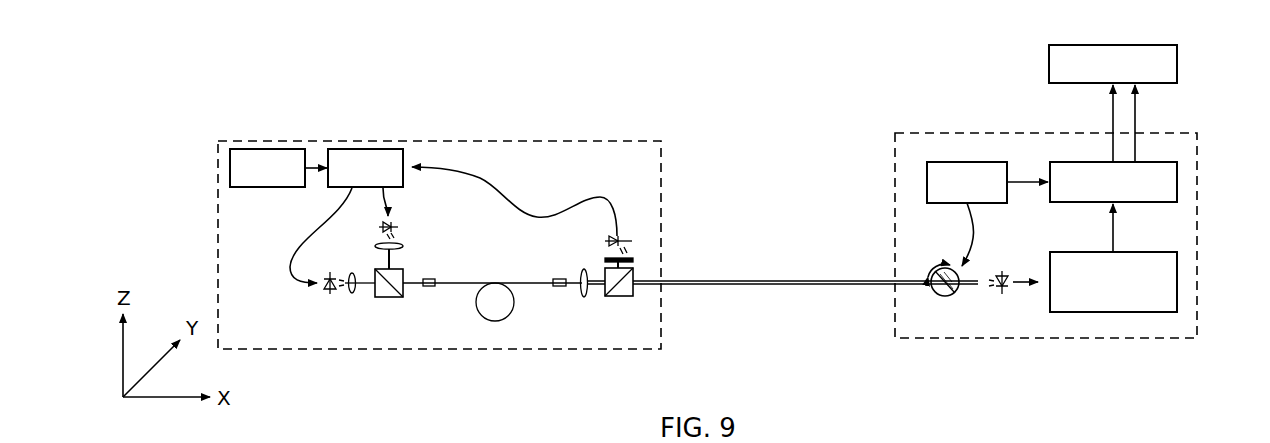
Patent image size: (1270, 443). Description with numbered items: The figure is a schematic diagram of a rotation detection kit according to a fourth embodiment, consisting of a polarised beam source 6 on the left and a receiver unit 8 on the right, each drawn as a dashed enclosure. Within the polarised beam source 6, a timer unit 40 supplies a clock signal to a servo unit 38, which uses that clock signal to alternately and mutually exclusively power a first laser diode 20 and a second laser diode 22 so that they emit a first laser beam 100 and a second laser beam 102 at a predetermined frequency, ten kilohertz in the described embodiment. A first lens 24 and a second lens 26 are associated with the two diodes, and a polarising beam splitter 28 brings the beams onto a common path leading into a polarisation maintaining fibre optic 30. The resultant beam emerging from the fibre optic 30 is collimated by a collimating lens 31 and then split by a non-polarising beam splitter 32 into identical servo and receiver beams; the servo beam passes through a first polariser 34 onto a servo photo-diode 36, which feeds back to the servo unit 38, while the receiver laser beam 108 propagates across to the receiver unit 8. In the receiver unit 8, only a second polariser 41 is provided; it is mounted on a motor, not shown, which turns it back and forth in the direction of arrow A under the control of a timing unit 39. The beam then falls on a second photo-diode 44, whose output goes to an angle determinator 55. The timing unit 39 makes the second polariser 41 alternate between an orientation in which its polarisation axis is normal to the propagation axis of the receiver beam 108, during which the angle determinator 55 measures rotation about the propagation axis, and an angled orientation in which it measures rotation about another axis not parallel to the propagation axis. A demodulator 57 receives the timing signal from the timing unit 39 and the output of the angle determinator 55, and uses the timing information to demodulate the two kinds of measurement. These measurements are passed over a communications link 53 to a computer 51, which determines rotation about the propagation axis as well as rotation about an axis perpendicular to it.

The polarised beam source 6 is at (420, 140).
The receiver unit 8 is at (1180, 338).
The first laser diode 20 is at (327, 291).
The second laser diode 22 is at (393, 224).
The first lens 24 is at (352, 294).
The second lens 26 is at (406, 246).
The polarising beam splitter 28 is at (389, 298).
The polarisation maintaining fibre optic 30 is at (505, 319).
The collimating lens 31 is at (588, 297).
The non-polarising beam splitter 32 is at (634, 290).
The first polariser 34 is at (640, 258).
The servo photo-diode 36 is at (626, 239).
The servo unit 38 is at (360, 149).
The timing unit 39 is at (965, 162).
The timer unit 40 is at (230, 167).
The second polariser 41 is at (945, 294).
The second photo-diode 44 is at (1002, 294).
The computer 51 is at (1049, 60).
The communications link 53 is at (1113, 118).
The angle determinator 55 is at (1113, 312).
The demodulator 57 is at (1178, 192).
The first laser beam 100 is at (364, 286).
The second laser beam 102 is at (403, 258).
The receiver laser beam 108 is at (830, 285).